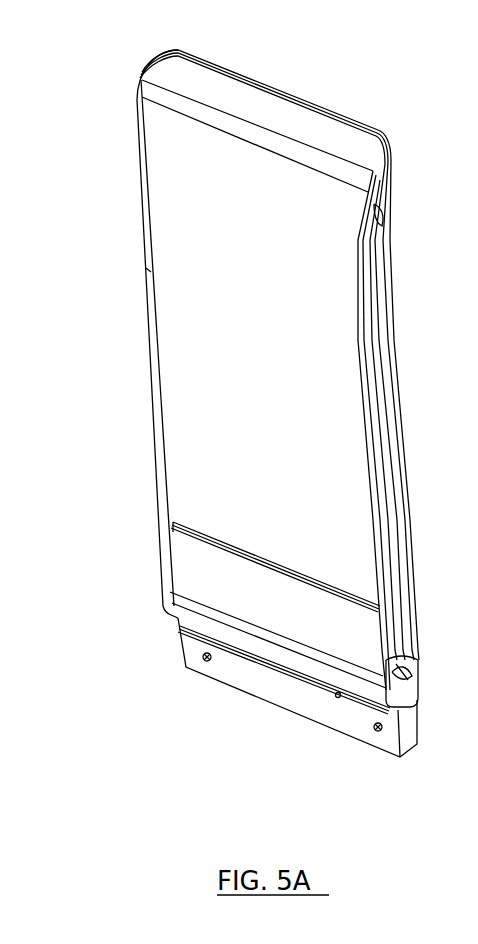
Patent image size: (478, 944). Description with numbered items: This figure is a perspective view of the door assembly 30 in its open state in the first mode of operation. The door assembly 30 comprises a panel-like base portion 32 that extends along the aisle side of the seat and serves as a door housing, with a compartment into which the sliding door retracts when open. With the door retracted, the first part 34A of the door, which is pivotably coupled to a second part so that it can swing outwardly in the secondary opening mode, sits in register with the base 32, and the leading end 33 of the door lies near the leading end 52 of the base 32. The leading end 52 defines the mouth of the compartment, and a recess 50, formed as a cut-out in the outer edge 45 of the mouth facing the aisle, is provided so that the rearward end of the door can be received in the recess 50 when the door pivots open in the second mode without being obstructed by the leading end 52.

The door assembly 30 is at (398, 127).
The base portion 32 is at (222, 85).
The leading end of the door 33 is at (418, 613).
The first part of the door 34A is at (372, 275).
The edge of the mouth 45 is at (393, 340).
The recess 50 is at (373, 407).
The leading end of the base 52 is at (378, 508).